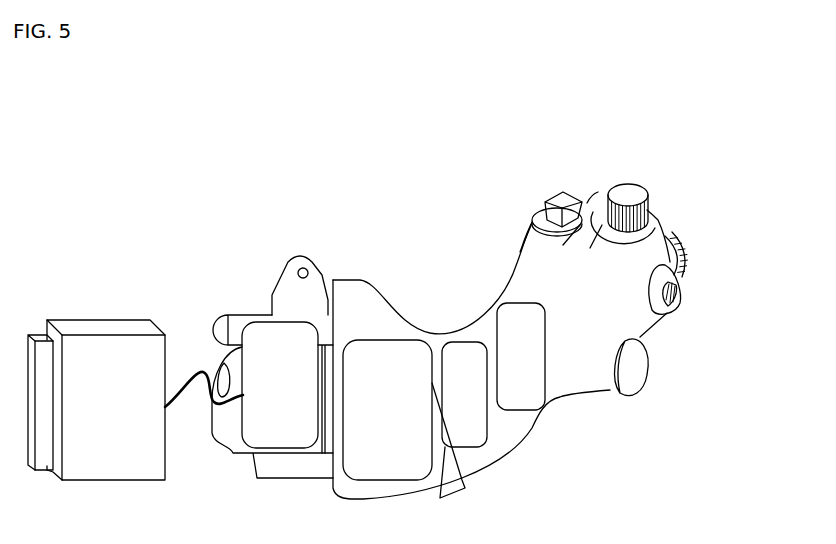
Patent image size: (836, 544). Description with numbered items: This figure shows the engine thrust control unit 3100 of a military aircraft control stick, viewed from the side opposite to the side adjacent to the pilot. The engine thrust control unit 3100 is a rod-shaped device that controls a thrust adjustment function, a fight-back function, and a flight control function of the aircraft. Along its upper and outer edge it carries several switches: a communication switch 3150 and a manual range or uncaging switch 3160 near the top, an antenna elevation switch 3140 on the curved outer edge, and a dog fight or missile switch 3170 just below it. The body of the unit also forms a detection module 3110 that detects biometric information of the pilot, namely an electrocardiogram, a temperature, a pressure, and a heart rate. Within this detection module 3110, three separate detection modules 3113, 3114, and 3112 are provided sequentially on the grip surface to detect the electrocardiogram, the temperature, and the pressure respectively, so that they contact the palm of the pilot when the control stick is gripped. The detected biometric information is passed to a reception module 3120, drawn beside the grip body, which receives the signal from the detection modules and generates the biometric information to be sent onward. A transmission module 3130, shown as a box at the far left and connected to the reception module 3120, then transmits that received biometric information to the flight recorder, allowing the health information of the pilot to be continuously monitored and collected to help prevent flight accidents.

The engine thrust control unit 3100 is at (124, 140).
The detection module 3110 is at (512, 227).
The detection module 3112 is at (517, 320).
The detection module 3113 is at (368, 362).
The detection module 3114 is at (462, 357).
The reception module 3120 is at (257, 338).
The transmission module 3130 is at (98, 330).
The antenna elevation switch 3140 is at (708, 225).
The communication switch 3150 is at (563, 197).
The manual range or uncaging switch 3160 is at (633, 190).
The dog fight or missile switch 3170 is at (682, 297).